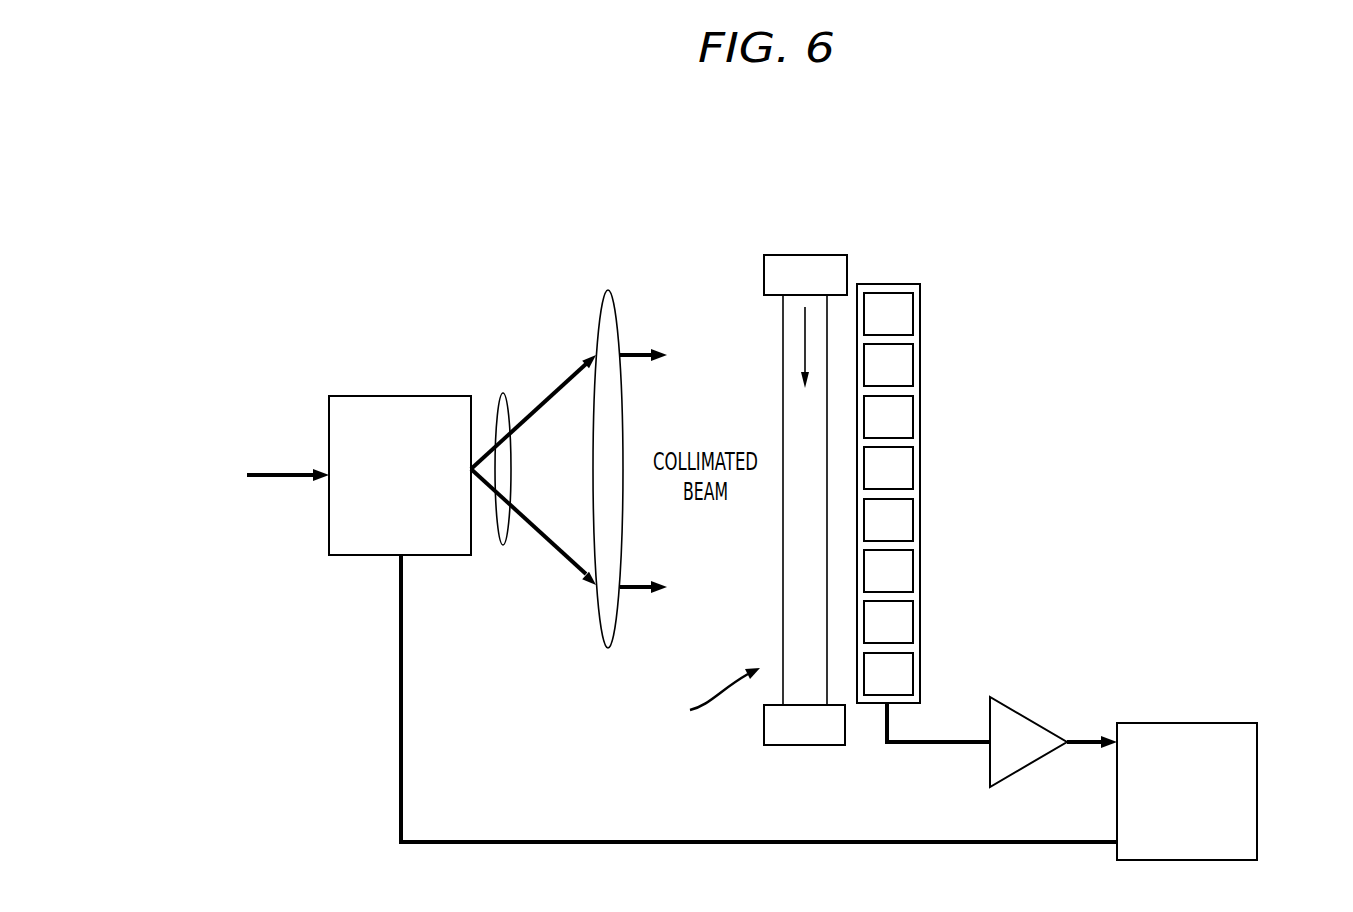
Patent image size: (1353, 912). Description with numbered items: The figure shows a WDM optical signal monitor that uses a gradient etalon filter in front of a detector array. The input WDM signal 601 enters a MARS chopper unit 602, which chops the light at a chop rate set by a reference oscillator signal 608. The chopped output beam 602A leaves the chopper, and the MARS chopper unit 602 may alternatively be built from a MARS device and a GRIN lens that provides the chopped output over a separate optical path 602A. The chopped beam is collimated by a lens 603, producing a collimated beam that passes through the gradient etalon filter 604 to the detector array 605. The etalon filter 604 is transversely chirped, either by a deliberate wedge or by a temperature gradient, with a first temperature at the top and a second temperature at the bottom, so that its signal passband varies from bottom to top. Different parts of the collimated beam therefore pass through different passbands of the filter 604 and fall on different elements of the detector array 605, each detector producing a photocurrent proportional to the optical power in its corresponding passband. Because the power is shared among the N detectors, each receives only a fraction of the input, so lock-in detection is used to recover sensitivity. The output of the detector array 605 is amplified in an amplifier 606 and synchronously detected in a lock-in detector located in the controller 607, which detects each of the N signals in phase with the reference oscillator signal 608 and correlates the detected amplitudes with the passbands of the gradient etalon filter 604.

The input WDM signal 601 is at (274, 461).
The MARS chopper unit 602 is at (398, 396).
The chopped output beam 602A is at (503, 393).
The lens 603 is at (609, 290).
The gradient etalon filter 604 is at (806, 255).
The detector array 605 is at (922, 492).
The amplifier 606 is at (1037, 716).
The controller 607 is at (1186, 723).
The reference oscillator signal 608 is at (540, 842).